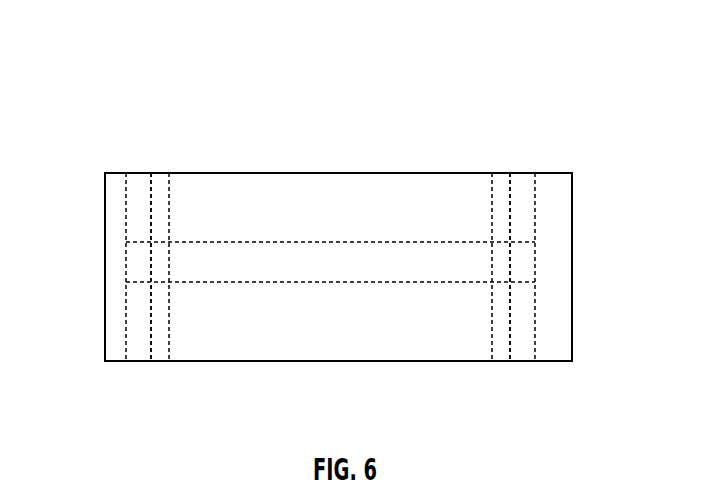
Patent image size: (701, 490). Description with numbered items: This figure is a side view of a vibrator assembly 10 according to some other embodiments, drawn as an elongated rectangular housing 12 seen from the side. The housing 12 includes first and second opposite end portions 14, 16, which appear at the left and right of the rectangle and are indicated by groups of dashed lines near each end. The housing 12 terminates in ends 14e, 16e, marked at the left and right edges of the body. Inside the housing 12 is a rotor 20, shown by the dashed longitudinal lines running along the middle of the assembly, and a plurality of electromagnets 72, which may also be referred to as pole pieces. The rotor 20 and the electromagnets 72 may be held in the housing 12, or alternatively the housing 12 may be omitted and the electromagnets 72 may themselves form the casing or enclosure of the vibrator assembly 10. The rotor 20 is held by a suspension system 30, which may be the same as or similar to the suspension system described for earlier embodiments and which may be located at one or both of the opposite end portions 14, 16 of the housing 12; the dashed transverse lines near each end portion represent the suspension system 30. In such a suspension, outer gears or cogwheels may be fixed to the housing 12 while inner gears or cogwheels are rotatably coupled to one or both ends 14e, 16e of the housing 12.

The vibrator assembly 10 is at (390, 85).
The housing 12 is at (227, 173).
The first end portion 14 is at (155, 155).
The first end 14e is at (105, 278).
The second end portion 16 is at (530, 123).
The second end 16e is at (572, 265).
The rotor 20 is at (337, 268).
The suspension system 30 is at (137, 347).
The electromagnets 72 is at (452, 333).